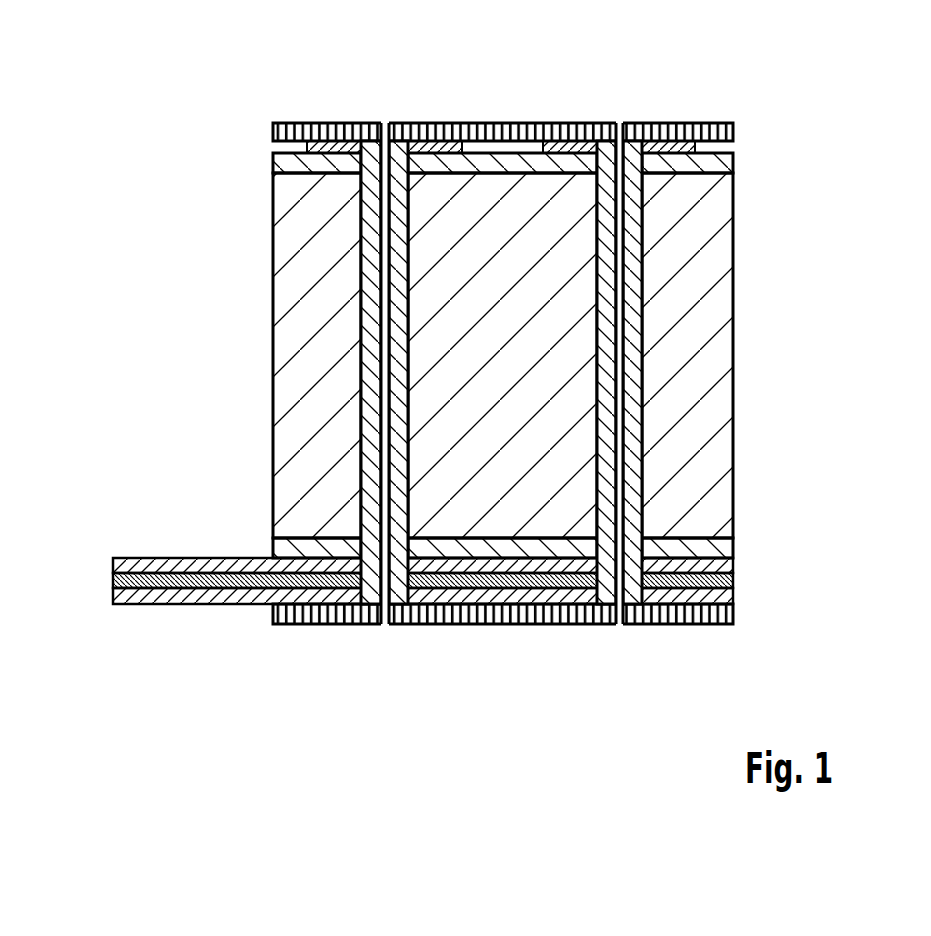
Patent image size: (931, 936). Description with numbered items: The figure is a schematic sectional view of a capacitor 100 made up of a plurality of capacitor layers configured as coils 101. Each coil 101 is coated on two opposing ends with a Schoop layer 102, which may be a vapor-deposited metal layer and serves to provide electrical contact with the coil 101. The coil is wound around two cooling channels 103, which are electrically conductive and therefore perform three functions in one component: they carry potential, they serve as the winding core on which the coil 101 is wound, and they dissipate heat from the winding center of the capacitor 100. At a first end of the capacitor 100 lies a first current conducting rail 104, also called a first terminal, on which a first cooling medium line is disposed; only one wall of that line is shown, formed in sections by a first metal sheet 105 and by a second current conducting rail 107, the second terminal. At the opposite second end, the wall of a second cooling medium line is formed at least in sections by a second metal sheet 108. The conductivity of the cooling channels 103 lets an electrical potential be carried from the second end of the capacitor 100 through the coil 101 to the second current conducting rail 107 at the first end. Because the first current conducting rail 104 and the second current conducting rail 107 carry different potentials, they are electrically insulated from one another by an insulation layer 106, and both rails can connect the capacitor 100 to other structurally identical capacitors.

The capacitor 100 is at (422, 353).
The coil 101 is at (280, 246).
The Schoop layer 102 is at (275, 163).
The cooling channel 103 is at (368, 322).
The first current conducting rail 104 is at (149, 562).
The first metal sheet 105 is at (495, 618).
The insulation layer 106 is at (120, 582).
The second current conducting rail 107 is at (149, 598).
The second metal sheet 108 is at (510, 130).